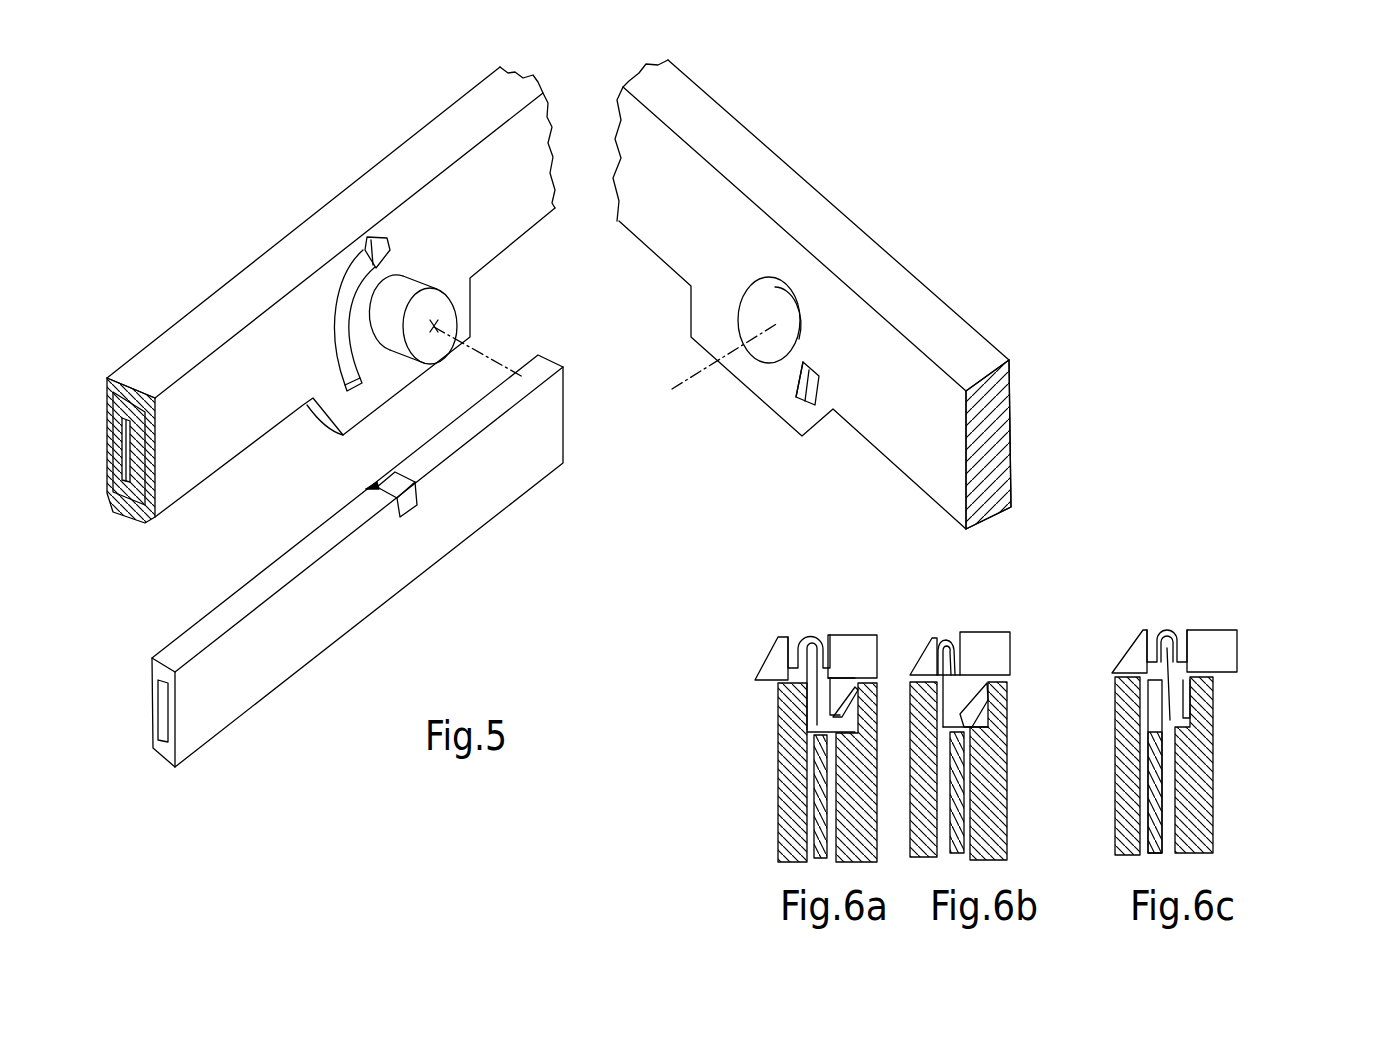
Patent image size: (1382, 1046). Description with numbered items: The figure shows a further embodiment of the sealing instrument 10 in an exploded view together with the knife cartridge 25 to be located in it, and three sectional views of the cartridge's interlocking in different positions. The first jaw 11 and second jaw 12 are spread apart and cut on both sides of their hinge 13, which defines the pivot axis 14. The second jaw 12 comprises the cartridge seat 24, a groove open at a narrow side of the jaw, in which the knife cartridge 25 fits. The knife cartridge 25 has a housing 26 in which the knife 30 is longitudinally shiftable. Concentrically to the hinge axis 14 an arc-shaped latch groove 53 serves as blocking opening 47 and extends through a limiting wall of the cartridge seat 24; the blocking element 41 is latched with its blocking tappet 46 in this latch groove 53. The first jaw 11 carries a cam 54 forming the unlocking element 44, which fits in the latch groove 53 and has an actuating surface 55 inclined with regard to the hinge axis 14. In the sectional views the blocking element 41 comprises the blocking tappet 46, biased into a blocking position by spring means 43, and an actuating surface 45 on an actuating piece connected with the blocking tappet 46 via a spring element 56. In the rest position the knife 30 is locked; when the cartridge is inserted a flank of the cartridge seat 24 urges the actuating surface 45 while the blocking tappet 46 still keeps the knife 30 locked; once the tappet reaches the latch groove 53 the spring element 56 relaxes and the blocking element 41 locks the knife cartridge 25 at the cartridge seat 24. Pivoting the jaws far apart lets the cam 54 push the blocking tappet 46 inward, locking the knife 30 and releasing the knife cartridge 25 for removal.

In FIG. 5, the sealing instrument 10 is at (933, 126).
In FIG. 5, the first jaw 11 is at (827, 219).
In FIG. 5, the second jaw 12 is at (294, 215).
In FIG. 5, the hinge 13 is at (738, 315).
In FIG. 5, the pivot axis 14 is at (475, 347).
In FIG. 5, the cartridge seat 24 is at (132, 383).
In FIG. 5, the knife cartridge 25 is at (118, 507).
In FIG. 6A, the knife cartridge 25 is at (767, 757).
In FIG. 6C, the knife cartridge 25 is at (1232, 765).
In FIG. 6A, the housing 26 is at (778, 802).
In FIG. 6B, the housing 26 is at (990, 820).
In FIG. 6C, the housing 26 is at (1197, 803).
In FIG. 6A, the knife 30 is at (833, 813).
In FIG. 6B, the knife 30 is at (915, 808).
In FIG. 6C, the knife 30 is at (1155, 766).
In FIG. 6A, the blocking element 41 is at (837, 615).
In FIG. 6B, the blocking element 41 is at (967, 613).
In FIG. 6C, the blocking element 41 is at (1207, 613).
In FIG. 6A, the spring means 43 is at (847, 717).
In FIG. 6B, the spring means 43 is at (988, 718).
In FIG. 6C, the spring means 43 is at (1192, 693).
In FIG. 5, the unlocking element 44 is at (718, 476).
In FIG. 6A, the actuating surface 45 is at (767, 660).
In FIG. 6B, the actuating surface 45 is at (920, 662).
In FIG. 6C, the actuating surface 45 is at (1129, 651).
In FIG. 5, the blocking tappet 46 is at (380, 252).
In FIG. 6A, the blocking tappet 46 is at (860, 640).
In FIG. 6B, the blocking tappet 46 is at (997, 645).
In FIG. 6C, the blocking tappet 46 is at (1227, 640).
In FIG. 5, the blocking opening 47 is at (477, 232).
In FIG. 5, the latch groove 53 is at (352, 290).
In FIG. 5, the cam 54 is at (790, 391).
In FIG. 5, the actuating surface 55 is at (802, 368).
In FIG. 6A, the spring element 56 is at (808, 633).
In FIG. 6C, the spring element 56 is at (1167, 627).